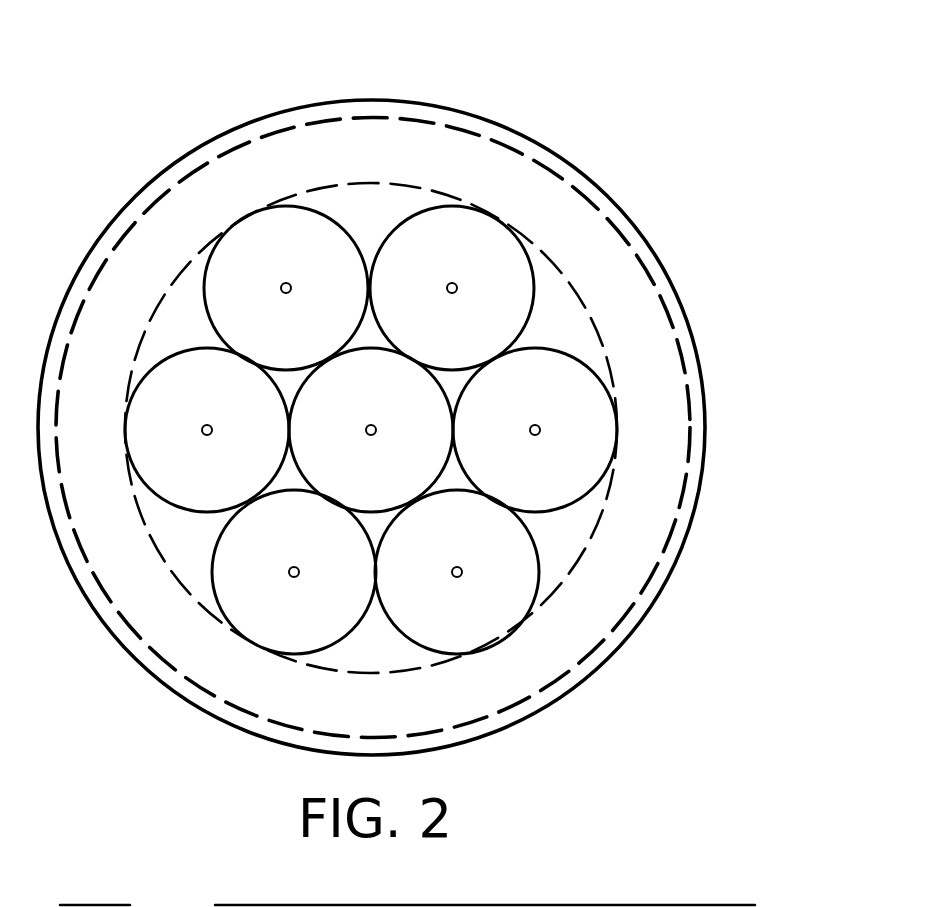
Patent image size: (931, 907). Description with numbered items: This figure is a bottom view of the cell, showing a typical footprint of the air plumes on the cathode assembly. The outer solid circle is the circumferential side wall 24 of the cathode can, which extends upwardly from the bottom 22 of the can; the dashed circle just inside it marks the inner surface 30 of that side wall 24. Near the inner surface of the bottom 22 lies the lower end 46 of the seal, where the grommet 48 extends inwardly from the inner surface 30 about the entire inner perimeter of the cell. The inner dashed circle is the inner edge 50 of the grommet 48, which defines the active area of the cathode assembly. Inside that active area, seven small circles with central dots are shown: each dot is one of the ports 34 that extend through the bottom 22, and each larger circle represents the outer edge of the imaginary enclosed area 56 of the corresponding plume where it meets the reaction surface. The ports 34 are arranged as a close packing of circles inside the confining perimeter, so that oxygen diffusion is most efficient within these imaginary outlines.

The bottom 22 is at (532, 205).
The side wall 24 is at (637, 227).
The inner surface 30 is at (128, 906).
The ports 34 is at (378, 427).
The lower end 46 is at (297, 155).
The grommet 48 is at (475, 155).
The inner edge 50 is at (346, 183).
The imaginary enclosed area 56 is at (540, 566).